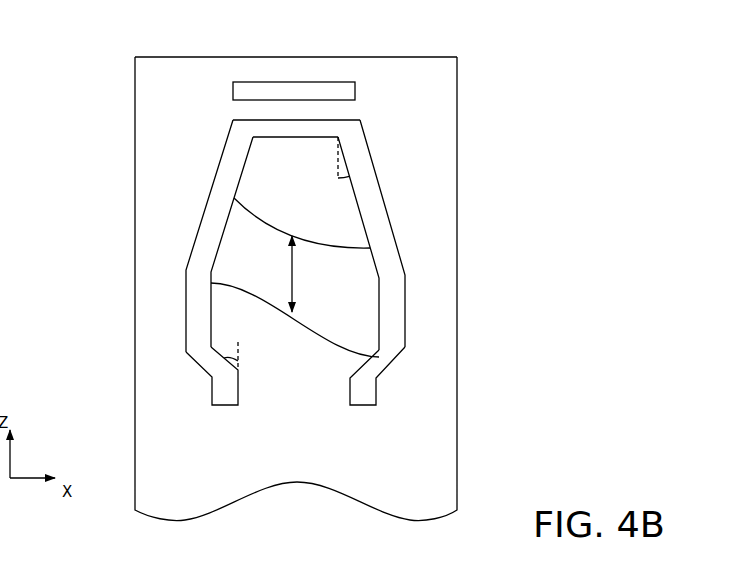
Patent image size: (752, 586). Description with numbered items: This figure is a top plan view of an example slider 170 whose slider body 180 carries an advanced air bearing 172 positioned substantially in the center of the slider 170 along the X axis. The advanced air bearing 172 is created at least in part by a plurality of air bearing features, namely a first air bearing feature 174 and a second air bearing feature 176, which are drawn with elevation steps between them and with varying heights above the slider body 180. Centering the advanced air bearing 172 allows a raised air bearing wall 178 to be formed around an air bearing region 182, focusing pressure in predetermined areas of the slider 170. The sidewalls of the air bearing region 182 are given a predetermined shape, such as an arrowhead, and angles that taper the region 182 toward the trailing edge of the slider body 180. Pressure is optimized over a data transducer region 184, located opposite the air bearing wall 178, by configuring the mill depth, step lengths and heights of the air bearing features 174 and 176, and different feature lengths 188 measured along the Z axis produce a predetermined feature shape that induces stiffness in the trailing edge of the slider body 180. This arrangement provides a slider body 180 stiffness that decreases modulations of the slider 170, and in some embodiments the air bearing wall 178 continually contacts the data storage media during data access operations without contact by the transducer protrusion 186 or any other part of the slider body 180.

The slider 170 is at (350, 270).
The advanced air bearing 172 is at (213, 176).
The first air bearing feature 174 is at (232, 238).
The second air bearing feature 176 is at (363, 222).
The raised air bearing wall 178 is at (222, 397).
The slider body 180 is at (457, 82).
The air bearing region 182 is at (343, 408).
The data transducer region 184 is at (310, 63).
The transducer protrusion 186 is at (233, 92).
The feature length 188 is at (310, 274).